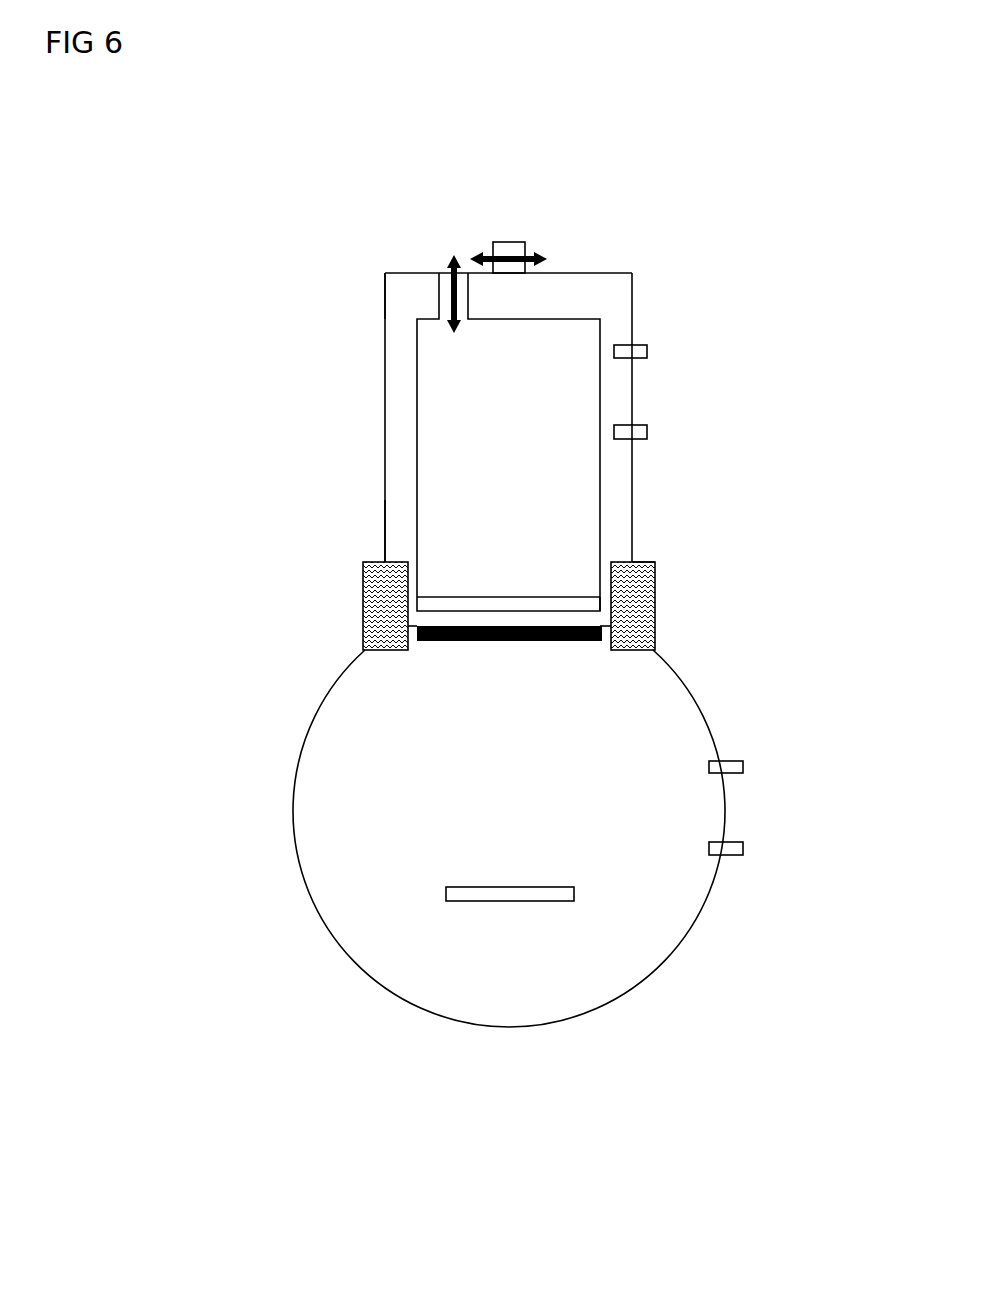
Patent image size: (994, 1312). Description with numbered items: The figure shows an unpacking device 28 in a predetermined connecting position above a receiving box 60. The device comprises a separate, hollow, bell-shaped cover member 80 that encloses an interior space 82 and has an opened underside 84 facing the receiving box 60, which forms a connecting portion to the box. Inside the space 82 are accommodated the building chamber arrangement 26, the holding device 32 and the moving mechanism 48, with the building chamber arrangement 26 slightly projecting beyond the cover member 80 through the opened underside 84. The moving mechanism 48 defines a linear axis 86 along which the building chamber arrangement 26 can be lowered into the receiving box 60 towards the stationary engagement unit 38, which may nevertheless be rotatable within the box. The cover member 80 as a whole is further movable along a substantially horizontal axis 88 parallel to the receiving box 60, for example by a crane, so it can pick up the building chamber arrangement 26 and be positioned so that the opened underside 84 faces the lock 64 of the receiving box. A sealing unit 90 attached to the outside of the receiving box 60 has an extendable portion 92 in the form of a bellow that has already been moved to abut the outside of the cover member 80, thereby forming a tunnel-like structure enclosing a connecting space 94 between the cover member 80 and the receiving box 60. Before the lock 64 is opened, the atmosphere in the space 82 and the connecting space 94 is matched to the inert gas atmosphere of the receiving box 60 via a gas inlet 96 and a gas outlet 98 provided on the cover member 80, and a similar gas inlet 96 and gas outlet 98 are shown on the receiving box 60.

The building chamber arrangement 26 is at (416, 382).
The unpacking device 28 is at (712, 90).
The holding device 32 is at (422, 310).
The engagement unit 38 is at (587, 897).
The moving mechanism 48 is at (420, 263).
The receiving box 60 is at (502, 1027).
The lock 64 is at (585, 653).
The cover member 80 is at (383, 480).
The space 82 is at (403, 545).
The opened underside 84 is at (410, 568).
The linear axis 86 is at (443, 270).
The further axis 88 is at (535, 230).
The sealing unit 90 is at (685, 602).
The extendable portion 92 is at (655, 565).
The connecting space 94 is at (605, 598).
The gas inlet 96 is at (653, 339).
The gas outlet 98 is at (653, 422).